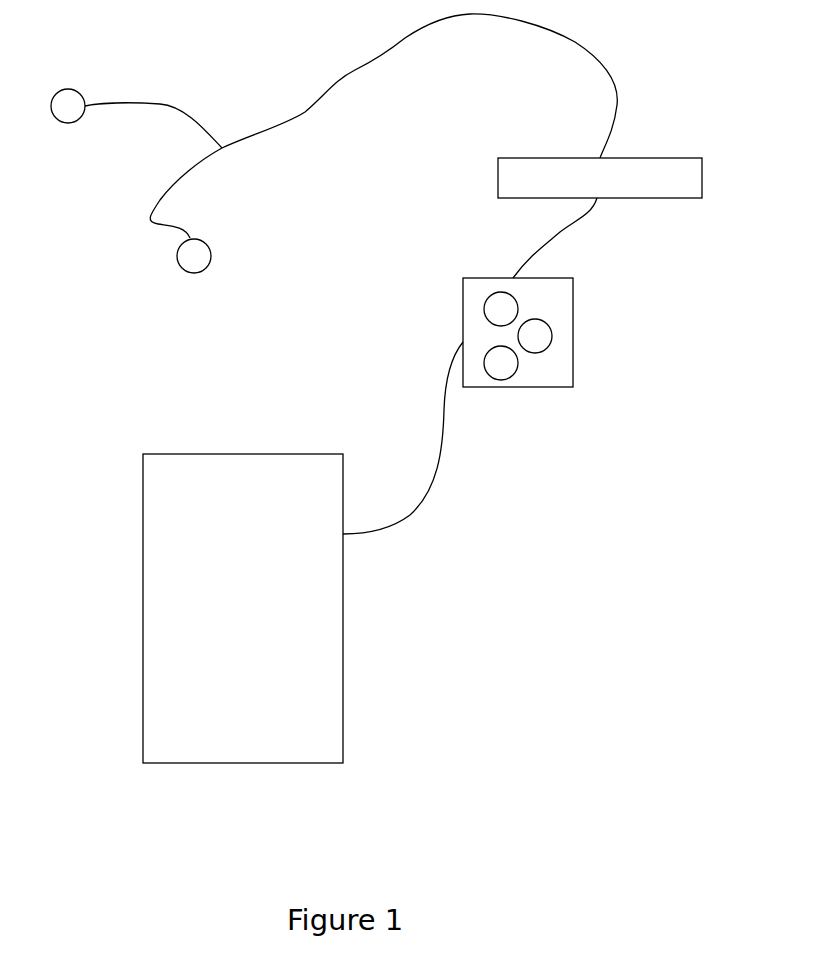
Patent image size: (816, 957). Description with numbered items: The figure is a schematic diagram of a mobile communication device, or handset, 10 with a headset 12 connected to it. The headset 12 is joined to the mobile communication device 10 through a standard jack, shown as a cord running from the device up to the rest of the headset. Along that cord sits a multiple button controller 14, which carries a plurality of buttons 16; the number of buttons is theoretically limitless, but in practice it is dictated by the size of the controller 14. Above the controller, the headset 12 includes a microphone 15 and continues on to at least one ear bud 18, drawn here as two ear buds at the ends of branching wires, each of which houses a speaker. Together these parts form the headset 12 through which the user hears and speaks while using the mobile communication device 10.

The mobile communication device 10 is at (344, 722).
The headset 12 is at (585, 488).
The multiple button controller 14 is at (474, 334).
The microphone 15 is at (522, 183).
The buttons 16 is at (536, 336).
The ear bud 18 is at (68, 107).